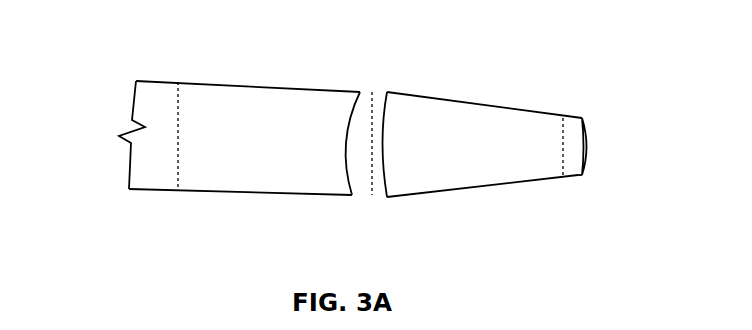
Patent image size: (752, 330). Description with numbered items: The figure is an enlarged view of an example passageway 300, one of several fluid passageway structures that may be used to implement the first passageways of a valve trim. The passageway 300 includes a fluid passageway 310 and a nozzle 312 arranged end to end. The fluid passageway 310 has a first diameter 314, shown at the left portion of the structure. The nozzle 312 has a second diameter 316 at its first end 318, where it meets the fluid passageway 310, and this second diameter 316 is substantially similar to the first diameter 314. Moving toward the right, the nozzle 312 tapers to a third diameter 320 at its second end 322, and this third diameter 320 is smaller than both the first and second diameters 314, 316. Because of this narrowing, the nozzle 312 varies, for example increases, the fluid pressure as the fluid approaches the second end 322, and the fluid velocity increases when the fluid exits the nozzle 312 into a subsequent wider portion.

The passageway 300 is at (136, 81).
The fluid passageway 310 is at (212, 95).
The nozzle 312 is at (472, 123).
The first diameter 314 is at (178, 174).
The second diameter 316 is at (373, 190).
The first end 318 is at (388, 92).
The third diameter 320 is at (568, 173).
The second end 322 is at (584, 117).